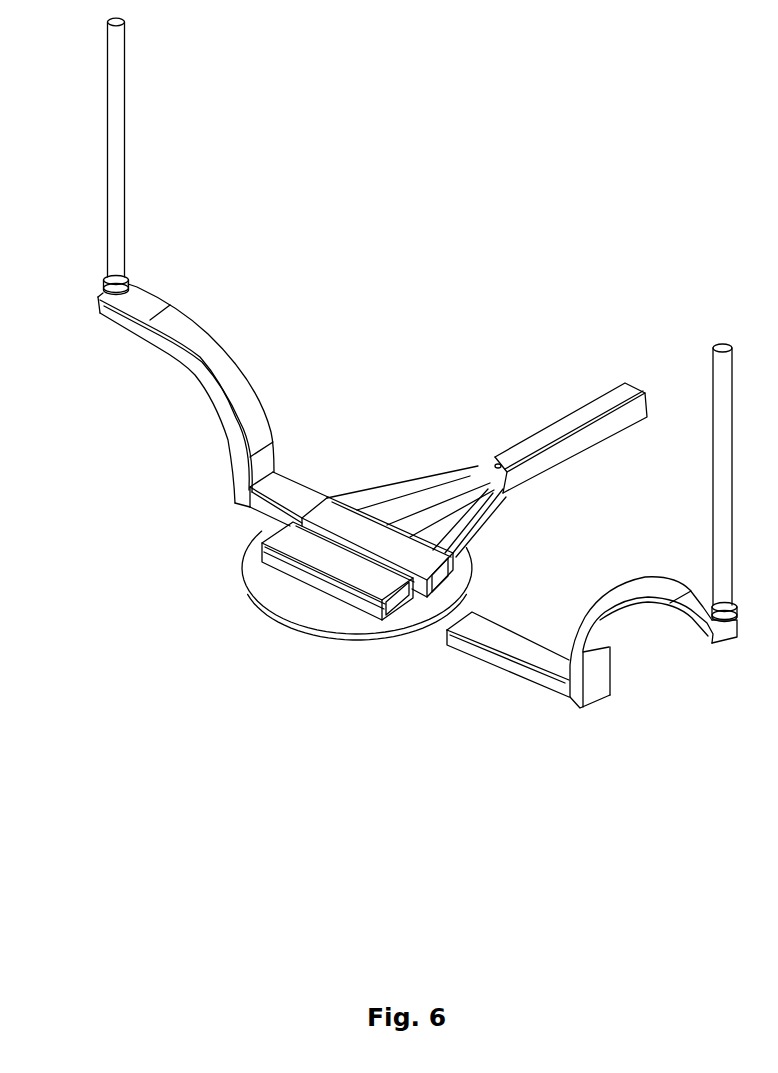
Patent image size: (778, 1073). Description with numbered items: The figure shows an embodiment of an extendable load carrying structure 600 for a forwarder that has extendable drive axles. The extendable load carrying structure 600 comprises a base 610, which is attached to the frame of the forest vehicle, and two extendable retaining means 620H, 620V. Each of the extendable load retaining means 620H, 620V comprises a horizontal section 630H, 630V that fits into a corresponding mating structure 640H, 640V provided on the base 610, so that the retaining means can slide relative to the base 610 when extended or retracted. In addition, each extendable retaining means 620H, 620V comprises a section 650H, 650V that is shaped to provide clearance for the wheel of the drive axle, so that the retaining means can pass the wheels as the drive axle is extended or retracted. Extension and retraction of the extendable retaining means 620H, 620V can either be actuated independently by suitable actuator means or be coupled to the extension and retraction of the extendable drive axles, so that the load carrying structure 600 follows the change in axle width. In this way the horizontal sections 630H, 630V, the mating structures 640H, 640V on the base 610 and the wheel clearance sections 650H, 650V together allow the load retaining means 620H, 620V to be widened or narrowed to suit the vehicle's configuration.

The extendable load carrying structure 600 is at (492, 157).
The base 610 is at (295, 598).
The extendable retaining means 620V is at (233, 293).
The extendable retaining means 620H is at (622, 537).
The horizontal section 630V is at (257, 523).
The horizontal section 630H is at (480, 653).
The mating structure 640V is at (328, 498).
The mating structure 640H is at (353, 598).
The section shaped to provide clearance for the wheel 650V is at (190, 377).
The section shaped to provide clearance for the wheel 650H is at (617, 610).